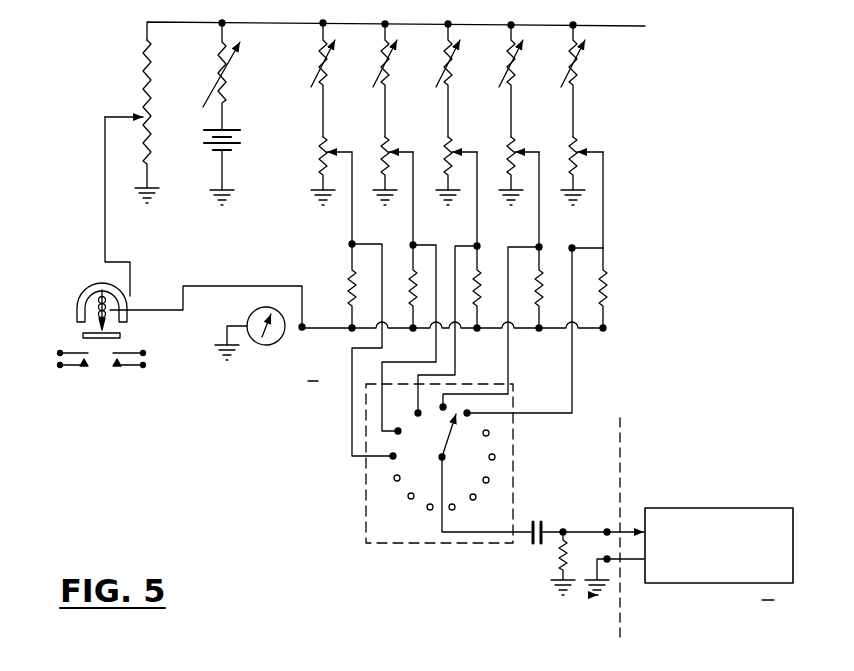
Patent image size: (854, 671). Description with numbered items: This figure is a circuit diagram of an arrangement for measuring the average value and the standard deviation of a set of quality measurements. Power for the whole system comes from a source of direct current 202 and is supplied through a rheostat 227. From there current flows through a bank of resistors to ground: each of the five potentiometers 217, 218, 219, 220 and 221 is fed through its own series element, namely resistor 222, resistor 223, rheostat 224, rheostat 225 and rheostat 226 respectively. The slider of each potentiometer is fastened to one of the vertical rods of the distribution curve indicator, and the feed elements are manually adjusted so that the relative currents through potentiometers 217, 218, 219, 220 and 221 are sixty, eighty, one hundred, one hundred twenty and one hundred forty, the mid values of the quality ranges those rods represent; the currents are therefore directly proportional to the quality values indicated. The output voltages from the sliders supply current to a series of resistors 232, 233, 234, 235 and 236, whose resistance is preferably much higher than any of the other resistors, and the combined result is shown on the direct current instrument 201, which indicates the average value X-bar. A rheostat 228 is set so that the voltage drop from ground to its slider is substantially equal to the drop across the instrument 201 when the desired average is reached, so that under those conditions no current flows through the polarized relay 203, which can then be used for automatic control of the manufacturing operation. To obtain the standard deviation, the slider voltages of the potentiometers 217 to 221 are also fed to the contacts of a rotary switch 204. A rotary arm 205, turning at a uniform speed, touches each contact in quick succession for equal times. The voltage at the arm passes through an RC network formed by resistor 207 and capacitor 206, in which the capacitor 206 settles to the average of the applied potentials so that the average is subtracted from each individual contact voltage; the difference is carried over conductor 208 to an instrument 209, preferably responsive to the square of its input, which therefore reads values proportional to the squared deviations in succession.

The direct current instrument 201 is at (252, 310).
The source of direct current 202 is at (241, 150).
The polarized relay 203 is at (80, 292).
The rotary switch 204 is at (366, 481).
The rotary arm 205 is at (450, 441).
The capacitor 206 is at (545, 500).
The resistor 207 is at (560, 561).
The conductor 208 is at (584, 528).
The instrument 209 is at (662, 583).
The resistor 217 is at (353, 127).
The resistor 218 is at (416, 127).
The resistor 219 is at (480, 127).
The resistor 220 is at (544, 129).
The resistor 221 is at (609, 129).
The resistor 222 is at (316, 60).
The resistor 223 is at (378, 62).
The rheostat 224 is at (441, 62).
The rheostat 225 is at (504, 64).
The rheostat 226 is at (567, 66).
The rheostat 227 is at (219, 68).
The rheostat 228 is at (142, 62).
The resistor 232 is at (349, 286).
The resistor 233 is at (407, 264).
The resistor 234 is at (481, 262).
The resistor 235 is at (547, 262).
The resistor 236 is at (612, 290).